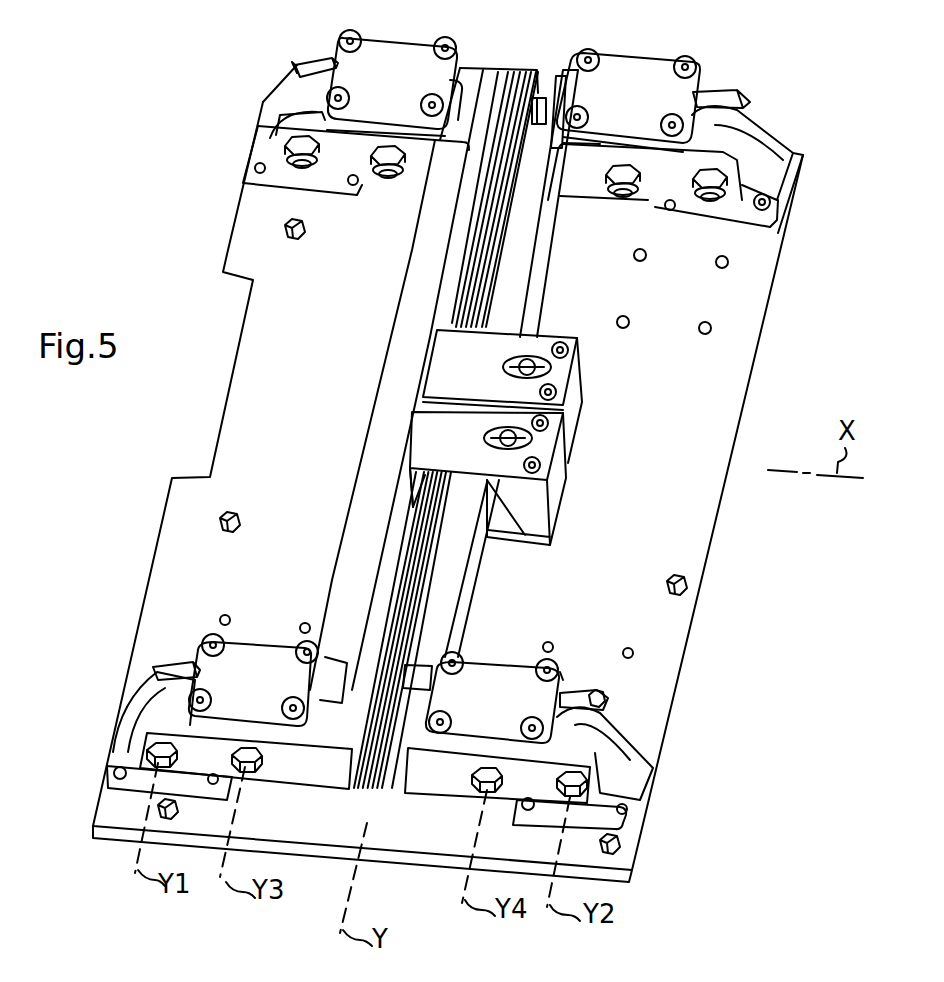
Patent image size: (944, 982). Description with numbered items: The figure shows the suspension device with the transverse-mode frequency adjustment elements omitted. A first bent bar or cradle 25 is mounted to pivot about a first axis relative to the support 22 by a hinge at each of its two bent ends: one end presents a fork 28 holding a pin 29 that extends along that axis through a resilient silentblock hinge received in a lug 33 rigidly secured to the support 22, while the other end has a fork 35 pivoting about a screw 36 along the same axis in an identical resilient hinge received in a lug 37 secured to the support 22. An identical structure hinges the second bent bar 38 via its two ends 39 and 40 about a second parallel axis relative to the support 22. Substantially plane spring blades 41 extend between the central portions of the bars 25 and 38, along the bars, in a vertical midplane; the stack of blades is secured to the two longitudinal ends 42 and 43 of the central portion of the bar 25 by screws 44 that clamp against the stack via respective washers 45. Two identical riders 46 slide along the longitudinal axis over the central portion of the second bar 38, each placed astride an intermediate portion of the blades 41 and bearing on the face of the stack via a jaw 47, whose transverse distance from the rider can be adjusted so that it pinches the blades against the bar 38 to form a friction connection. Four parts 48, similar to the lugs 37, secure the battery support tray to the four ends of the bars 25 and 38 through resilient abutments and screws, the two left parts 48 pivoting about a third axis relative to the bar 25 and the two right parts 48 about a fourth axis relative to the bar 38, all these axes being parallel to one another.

The support 22 is at (708, 562).
The first bent bar 25 is at (415, 283).
The fork 28 is at (175, 665).
The pin 29 is at (140, 755).
The lug 33 is at (135, 695).
The fork 35 is at (298, 64).
The screw 36 is at (302, 165).
The lug 37 is at (265, 104).
The second bent bar 38 is at (555, 285).
The end 39 is at (430, 680).
The end 40 is at (562, 75).
The spring blades 41 is at (485, 240).
The longitudinal end 42 is at (330, 695).
The longitudinal end 43 is at (493, 75).
The screws 44 is at (538, 128).
The washers 45 is at (535, 68).
The riders 46 is at (575, 420).
The jaw 47 is at (410, 483).
The parts 48 is at (648, 68).